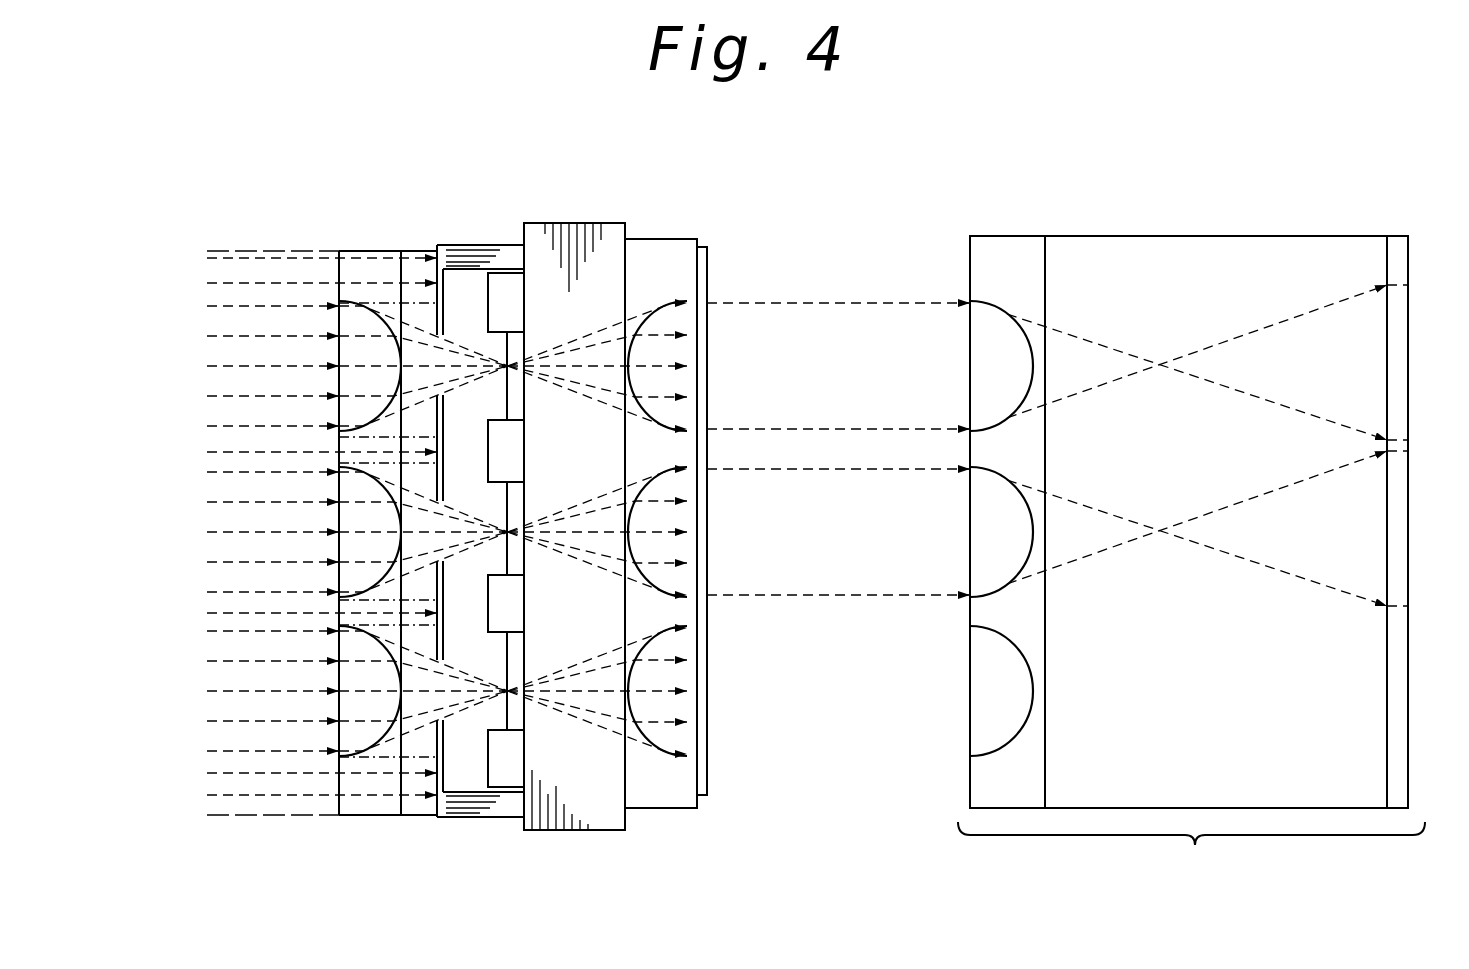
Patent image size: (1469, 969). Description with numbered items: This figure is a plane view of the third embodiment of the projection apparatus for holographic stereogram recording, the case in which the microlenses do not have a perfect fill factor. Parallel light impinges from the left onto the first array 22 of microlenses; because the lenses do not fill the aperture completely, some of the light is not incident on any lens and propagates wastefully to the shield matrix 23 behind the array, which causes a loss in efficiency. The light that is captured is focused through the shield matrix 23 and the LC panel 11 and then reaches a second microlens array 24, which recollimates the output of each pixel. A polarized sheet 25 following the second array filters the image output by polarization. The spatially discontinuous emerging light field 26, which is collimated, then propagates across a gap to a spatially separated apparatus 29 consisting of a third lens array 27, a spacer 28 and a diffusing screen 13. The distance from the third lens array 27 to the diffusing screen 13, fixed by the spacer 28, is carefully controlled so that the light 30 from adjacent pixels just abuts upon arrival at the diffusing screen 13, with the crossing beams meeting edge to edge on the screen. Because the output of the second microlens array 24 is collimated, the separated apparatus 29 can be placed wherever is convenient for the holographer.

The LC panel 11 is at (498, 812).
The diffusing screen 13 is at (1395, 262).
The first array 22 is at (348, 250).
The shield matrix 23 is at (462, 245).
The second microlens array 24 is at (660, 239).
The polarized sheet 25 is at (708, 264).
The emerging light field 26 is at (820, 300).
The third lens array 27 is at (1007, 243).
The spacer 28 is at (1220, 247).
The spatially separated apparatus 29 is at (1191, 855).
The light 30 is at (1275, 407).